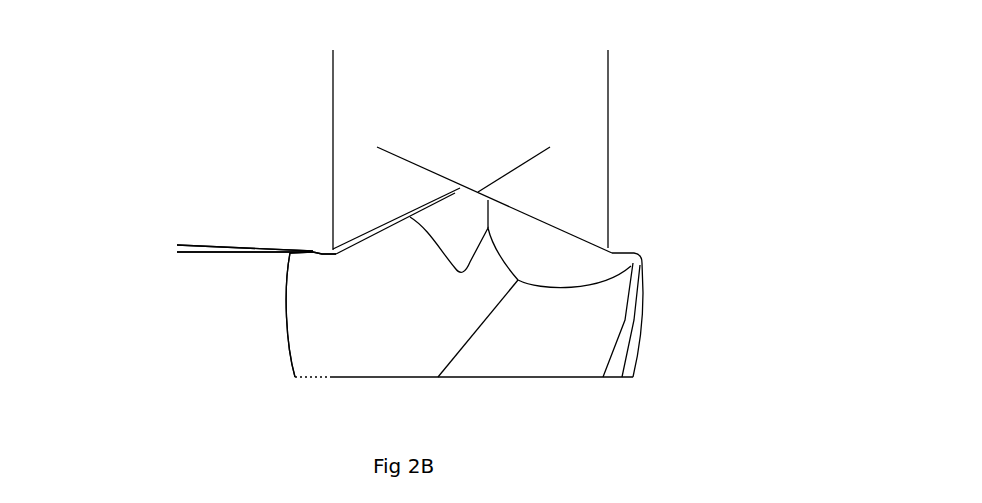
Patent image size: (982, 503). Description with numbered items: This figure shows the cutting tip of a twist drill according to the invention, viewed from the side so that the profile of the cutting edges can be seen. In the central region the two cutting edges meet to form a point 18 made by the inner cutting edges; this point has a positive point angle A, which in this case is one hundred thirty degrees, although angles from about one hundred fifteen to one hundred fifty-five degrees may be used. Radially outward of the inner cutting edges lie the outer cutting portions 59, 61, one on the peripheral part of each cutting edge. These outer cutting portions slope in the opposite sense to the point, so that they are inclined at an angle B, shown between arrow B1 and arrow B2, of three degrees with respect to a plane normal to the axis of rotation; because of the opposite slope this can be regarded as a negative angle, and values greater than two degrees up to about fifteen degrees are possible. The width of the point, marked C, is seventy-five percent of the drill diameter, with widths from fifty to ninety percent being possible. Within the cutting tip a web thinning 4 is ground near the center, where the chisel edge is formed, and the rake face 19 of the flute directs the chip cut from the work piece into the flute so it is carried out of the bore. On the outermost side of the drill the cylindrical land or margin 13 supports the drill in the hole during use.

The web thinning 4 is at (453, 240).
The margin 13 is at (622, 346).
The point 18 is at (480, 190).
The rake face 19 is at (363, 292).
The outer cutting portion 59 is at (313, 250).
The outer cutting portion 61 is at (621, 253).
The point angle A is at (388, 150).
The outer cutting portion angle B is at (205, 222).
The arrow B1 is at (183, 232).
The arrow B2 is at (187, 273).
The point width C is at (608, 65).